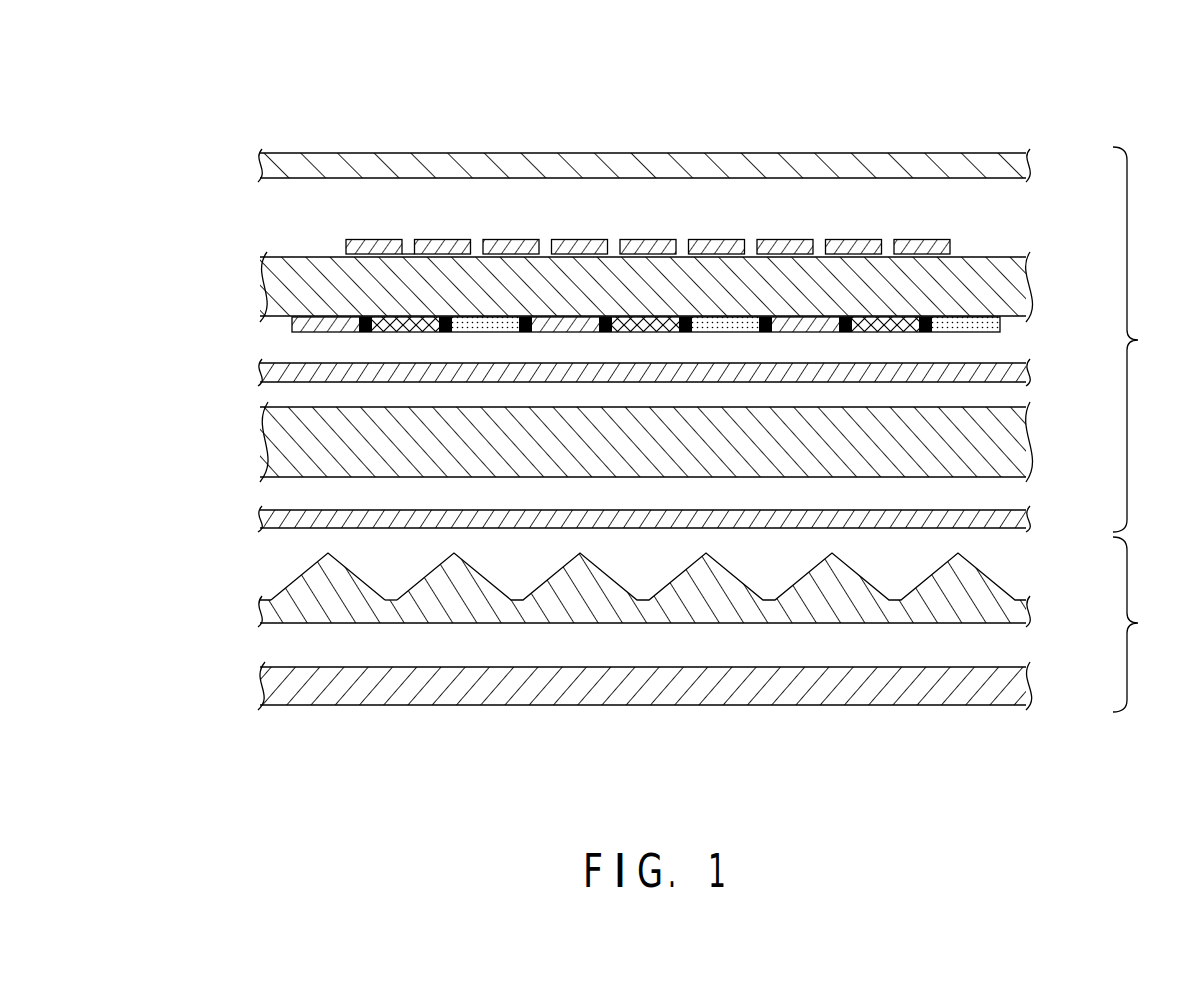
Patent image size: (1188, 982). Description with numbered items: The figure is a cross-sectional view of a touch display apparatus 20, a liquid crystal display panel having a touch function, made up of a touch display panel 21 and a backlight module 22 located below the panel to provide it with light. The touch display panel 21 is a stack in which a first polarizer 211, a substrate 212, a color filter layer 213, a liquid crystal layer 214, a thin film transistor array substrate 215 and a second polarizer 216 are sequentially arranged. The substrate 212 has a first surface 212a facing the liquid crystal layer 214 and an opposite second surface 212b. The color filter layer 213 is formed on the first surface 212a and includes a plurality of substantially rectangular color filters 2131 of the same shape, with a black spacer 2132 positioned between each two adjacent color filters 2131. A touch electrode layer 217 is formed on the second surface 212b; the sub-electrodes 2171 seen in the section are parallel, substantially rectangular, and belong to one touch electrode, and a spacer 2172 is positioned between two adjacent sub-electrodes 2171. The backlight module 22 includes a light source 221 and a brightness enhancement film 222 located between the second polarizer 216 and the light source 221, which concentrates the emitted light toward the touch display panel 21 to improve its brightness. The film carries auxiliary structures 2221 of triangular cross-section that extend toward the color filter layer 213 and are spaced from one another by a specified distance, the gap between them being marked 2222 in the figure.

The touch display apparatus 20 is at (614, 76).
The touch display panel 21 is at (1145, 339).
The backlight module 22 is at (1145, 624).
The first polarizer 211 is at (282, 162).
The substrate 212 is at (645, 263).
The first surface 212a is at (1018, 317).
The second surface 212b is at (980, 255).
The color filter layer 213 is at (644, 346).
The color filter 2131 is at (310, 333).
The black spacer 2132 is at (935, 333).
The liquid crystal layer 214 is at (255, 368).
The thin film transistor (TFT) array substrate 215 is at (277, 452).
The second polarizer 216 is at (263, 515).
The touch electrode layer 217 is at (566, 219).
The sub-electrode 2171 is at (348, 248).
The spacer 2172 is at (410, 240).
The light source 221 is at (262, 692).
The brightness enhancement film (BEF) 222 is at (581, 588).
The auxiliary structure 2221 is at (322, 581).
The groove between prisms 2222 is at (396, 566).